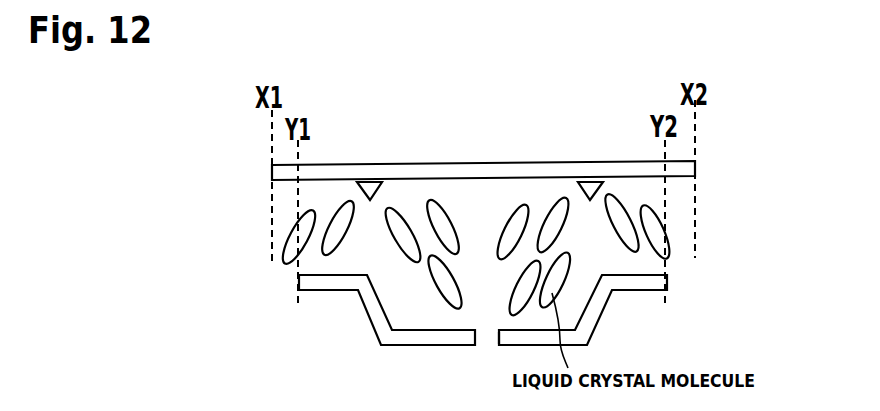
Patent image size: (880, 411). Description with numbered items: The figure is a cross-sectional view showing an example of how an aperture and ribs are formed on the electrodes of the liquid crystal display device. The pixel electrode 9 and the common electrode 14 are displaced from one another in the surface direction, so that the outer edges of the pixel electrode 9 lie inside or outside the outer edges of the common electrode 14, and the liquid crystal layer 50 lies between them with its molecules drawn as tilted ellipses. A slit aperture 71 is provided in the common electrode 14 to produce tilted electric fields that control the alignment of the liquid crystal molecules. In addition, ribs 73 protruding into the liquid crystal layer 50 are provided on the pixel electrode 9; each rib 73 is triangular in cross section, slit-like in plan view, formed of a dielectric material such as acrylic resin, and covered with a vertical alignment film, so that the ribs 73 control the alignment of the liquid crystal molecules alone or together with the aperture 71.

The pixel electrode 9 is at (712, 167).
The common electrode 14 is at (684, 276).
The liquid crystal layer 50 is at (712, 222).
The slit aperture 71 is at (495, 345).
The rib 73 is at (372, 183).